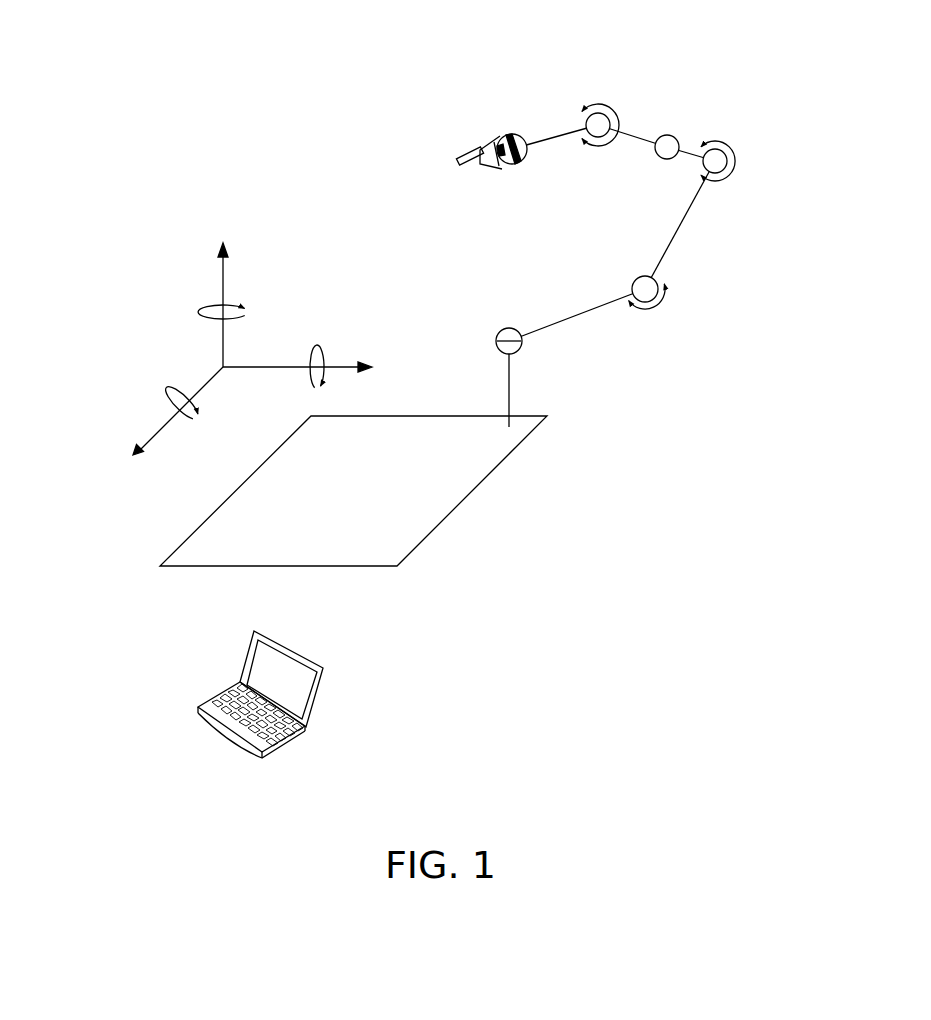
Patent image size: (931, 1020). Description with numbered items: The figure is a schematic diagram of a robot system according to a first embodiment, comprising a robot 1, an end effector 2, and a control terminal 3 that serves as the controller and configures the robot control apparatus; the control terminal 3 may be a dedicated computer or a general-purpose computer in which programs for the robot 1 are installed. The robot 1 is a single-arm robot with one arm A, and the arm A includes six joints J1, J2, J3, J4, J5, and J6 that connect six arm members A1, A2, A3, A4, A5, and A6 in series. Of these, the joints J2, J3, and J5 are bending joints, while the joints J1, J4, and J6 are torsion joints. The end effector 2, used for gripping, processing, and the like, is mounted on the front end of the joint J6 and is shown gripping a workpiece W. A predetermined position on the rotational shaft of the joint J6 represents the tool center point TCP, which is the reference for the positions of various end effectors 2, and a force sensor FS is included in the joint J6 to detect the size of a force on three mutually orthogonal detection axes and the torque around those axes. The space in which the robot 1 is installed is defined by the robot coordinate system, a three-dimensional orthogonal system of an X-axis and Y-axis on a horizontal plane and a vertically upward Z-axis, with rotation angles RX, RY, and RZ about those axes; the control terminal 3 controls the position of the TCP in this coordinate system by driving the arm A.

The robot 1 is at (402, 16).
The arm A is at (701, 65).
The end effector 2 is at (499, 158).
The control terminal 3 is at (280, 694).
The arm member A1 is at (556, 384).
The arm member A2 is at (592, 318).
The arm member A3 is at (705, 225).
The arm member A4 is at (716, 140).
The arm member A5 is at (613, 103).
The arm member A6 is at (517, 104).
The joint J1 is at (549, 358).
The joint J2 is at (684, 301).
The joint J3 is at (753, 172).
The joint J4 is at (711, 121).
The joint J5 is at (574, 117).
The joint J6 is at (464, 126).
The force sensor FS is at (552, 163).
The tool center point TCP is at (448, 132).
The workpiece W is at (443, 168).